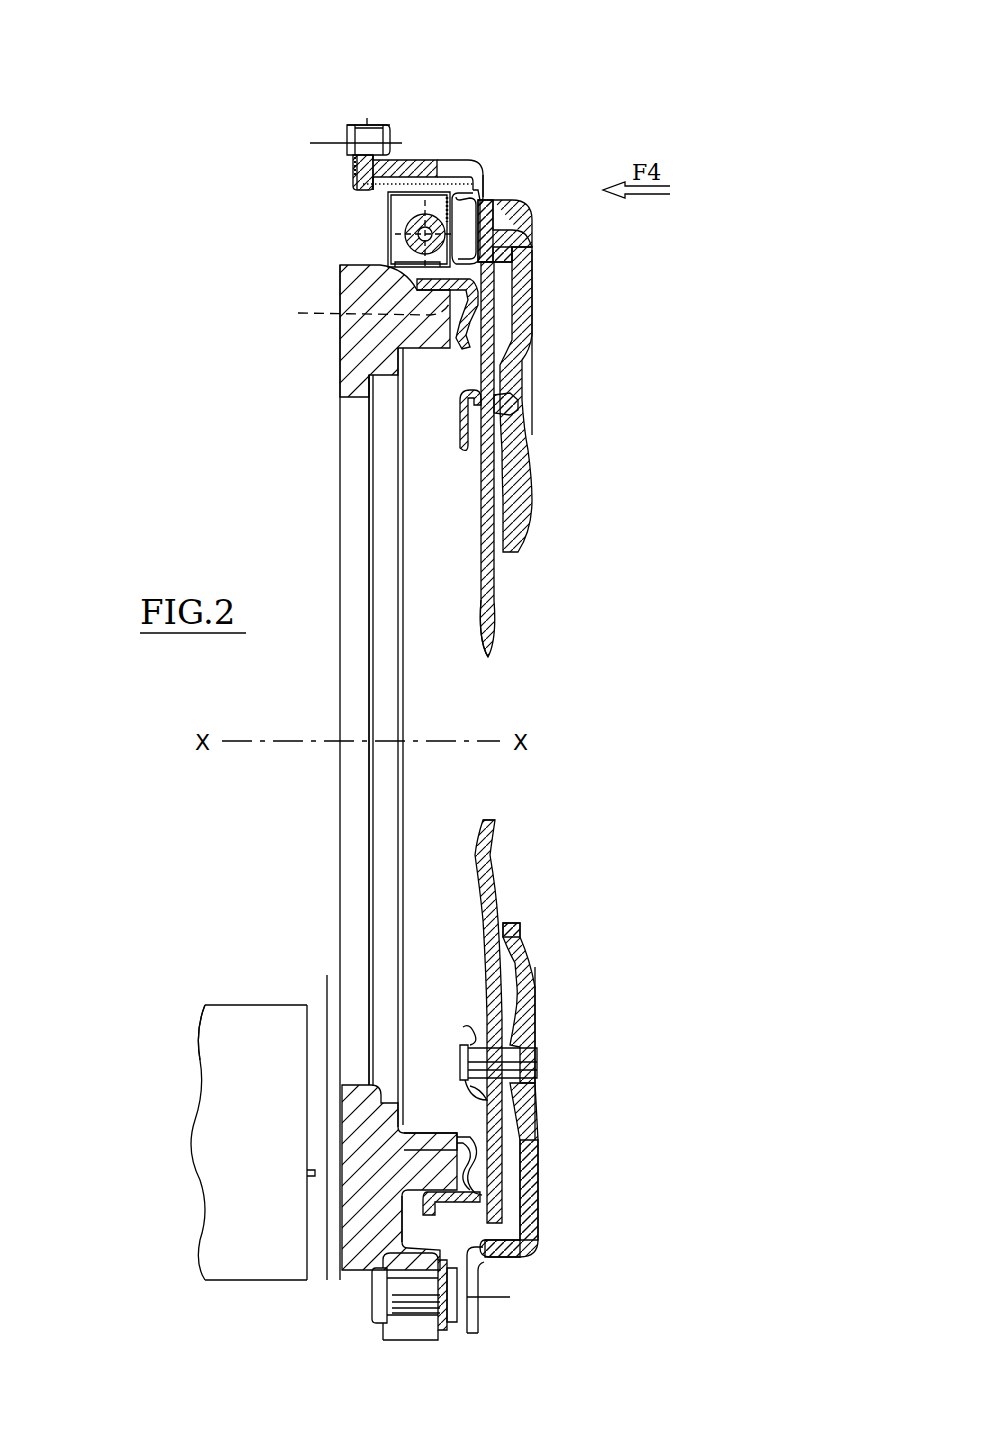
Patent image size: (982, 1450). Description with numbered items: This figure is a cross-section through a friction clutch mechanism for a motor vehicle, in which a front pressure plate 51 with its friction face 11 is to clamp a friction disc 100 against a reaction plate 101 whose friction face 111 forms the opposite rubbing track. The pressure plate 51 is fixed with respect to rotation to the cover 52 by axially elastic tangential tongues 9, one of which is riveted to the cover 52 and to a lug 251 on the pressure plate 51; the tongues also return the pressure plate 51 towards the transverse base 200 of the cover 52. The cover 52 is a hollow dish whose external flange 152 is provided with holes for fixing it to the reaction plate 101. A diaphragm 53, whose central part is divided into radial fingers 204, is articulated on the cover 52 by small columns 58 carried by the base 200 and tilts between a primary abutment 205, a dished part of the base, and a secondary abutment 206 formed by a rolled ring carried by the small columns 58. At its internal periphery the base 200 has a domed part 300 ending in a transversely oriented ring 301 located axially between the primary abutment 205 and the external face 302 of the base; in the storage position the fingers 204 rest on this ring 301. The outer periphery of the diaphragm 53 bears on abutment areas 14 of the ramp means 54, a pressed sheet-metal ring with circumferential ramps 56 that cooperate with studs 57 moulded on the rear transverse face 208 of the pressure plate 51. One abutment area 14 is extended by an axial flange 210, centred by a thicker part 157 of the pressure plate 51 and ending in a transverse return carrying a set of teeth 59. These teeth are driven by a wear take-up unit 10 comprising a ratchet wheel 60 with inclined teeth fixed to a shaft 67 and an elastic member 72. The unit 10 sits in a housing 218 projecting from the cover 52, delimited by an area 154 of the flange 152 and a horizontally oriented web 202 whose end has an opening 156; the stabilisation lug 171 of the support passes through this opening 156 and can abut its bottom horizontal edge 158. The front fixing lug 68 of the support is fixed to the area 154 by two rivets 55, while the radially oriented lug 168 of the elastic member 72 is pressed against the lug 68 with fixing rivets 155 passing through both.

The tangential tongues 9 is at (455, 1338).
The unit 10 is at (382, 237).
The friction face 11 is at (338, 341).
The abutment areas 14 is at (534, 322).
The pressure plate 51 is at (338, 372).
The cover 52 is at (534, 393).
The diaphragm 53 is at (492, 601).
The ramp means 54 is at (490, 1260).
The rivets 55 is at (495, 275).
The ramps 56 is at (354, 317).
The studs 57 is at (437, 350).
The small columns 58 is at (538, 1060).
The set of teeth 59 is at (400, 1225).
The ratchet wheel 60 is at (415, 207).
The shaft 67 is at (408, 262).
The front fixing lug 68 is at (355, 120).
The elastic member 72 is at (525, 258).
The friction disc 100 is at (307, 1281).
The reaction plate 101 is at (200, 1248).
The friction face 111 is at (307, 1172).
The flange 152 is at (366, 122).
The area 154 is at (371, 120).
The rivets 155 is at (398, 120).
The opening 156 is at (452, 168).
The thicker part 157 is at (437, 1165).
The bottom horizontal edge 158 is at (485, 195).
The radially oriented lug 168 is at (305, 147).
The stabilisation lug 171 is at (497, 202).
The transverse base 200 is at (538, 1100).
The horizontally oriented web 202 is at (430, 160).
The radial fingers 204 is at (499, 897).
The primary abutment 205 is at (500, 432).
The secondary abutment 206 is at (457, 398).
The rear transverse face 208 is at (407, 1122).
The flange 210 is at (403, 1195).
The housing 218 is at (488, 168).
The lug 251 is at (400, 1333).
The domed part 300 is at (540, 982).
The ring 301 is at (527, 930).
The external face 302 is at (540, 1195).